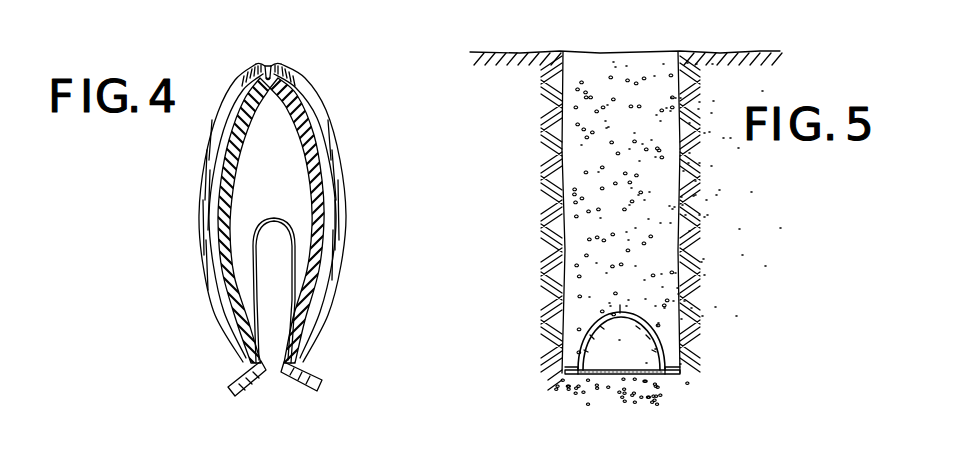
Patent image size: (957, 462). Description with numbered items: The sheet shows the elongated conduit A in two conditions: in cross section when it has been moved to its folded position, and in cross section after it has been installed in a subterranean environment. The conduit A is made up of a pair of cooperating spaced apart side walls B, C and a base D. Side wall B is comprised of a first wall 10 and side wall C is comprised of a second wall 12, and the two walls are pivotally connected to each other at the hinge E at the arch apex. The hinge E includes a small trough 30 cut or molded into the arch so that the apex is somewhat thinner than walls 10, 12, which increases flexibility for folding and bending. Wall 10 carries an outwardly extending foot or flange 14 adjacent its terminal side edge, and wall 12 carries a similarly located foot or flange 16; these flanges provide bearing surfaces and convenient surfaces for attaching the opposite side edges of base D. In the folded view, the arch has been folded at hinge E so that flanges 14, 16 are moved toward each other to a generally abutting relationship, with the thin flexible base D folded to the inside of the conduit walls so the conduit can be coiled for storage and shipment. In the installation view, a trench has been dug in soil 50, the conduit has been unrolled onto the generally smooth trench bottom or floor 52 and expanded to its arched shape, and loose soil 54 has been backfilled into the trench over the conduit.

In FIG. 4, the first wall 10 is at (226, 199).
In FIG. 4, the second wall 12 is at (306, 138).
In FIG. 4, the foot or flange 14 is at (244, 368).
In FIG. 4, the foot or flange 16 is at (314, 374).
In FIG. 4, the trough 30 is at (267, 68).
In FIG. 5, the soil 50 is at (501, 78).
In FIG. 5, the trench bottom or floor 52 is at (668, 375).
In FIG. 5, the loose soil 54 is at (657, 190).
In FIG. 5, the conduit A is at (589, 323).
In FIG. 4, the side wall B is at (208, 181).
In FIG. 4, the side wall C is at (334, 153).
In FIG. 4, the base D is at (291, 221).
In FIG. 5, the base D is at (571, 385).
In FIG. 4, the hinge E is at (272, 63).